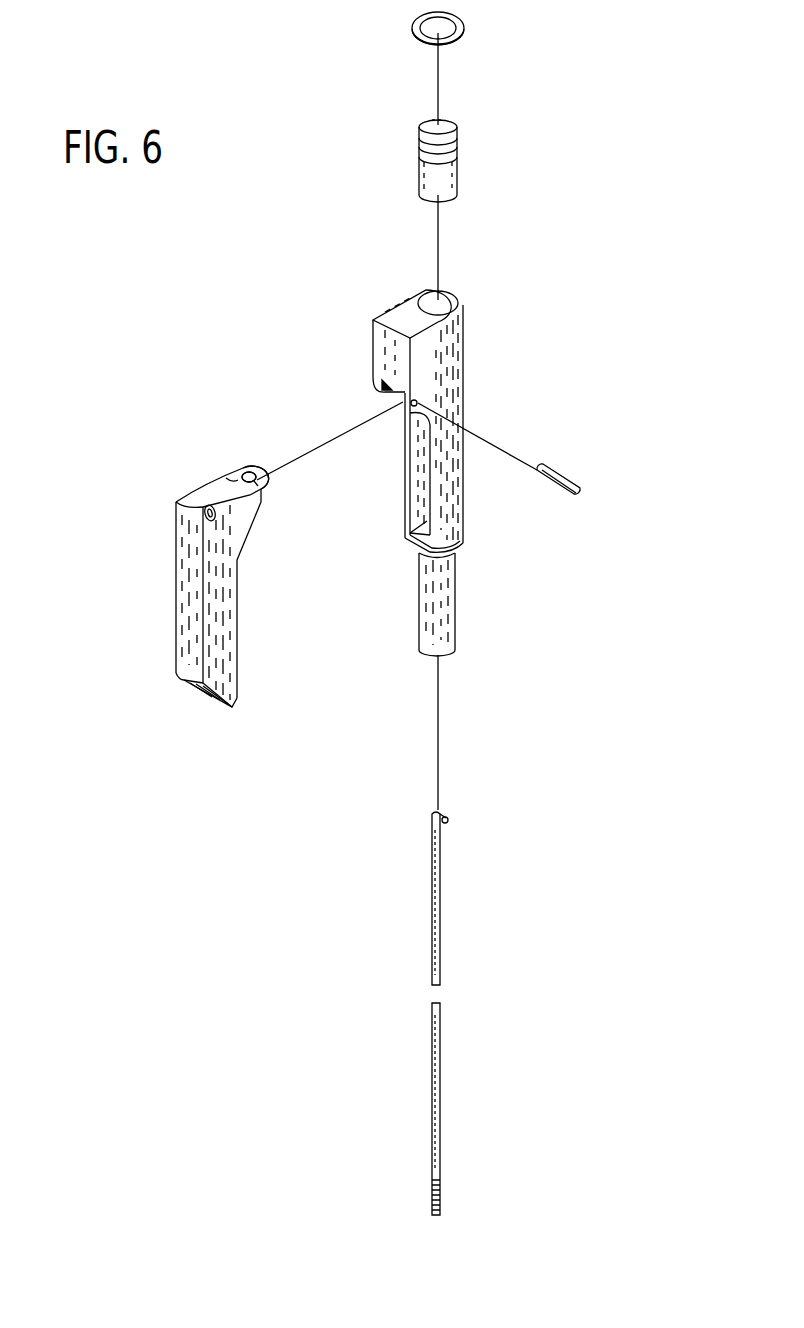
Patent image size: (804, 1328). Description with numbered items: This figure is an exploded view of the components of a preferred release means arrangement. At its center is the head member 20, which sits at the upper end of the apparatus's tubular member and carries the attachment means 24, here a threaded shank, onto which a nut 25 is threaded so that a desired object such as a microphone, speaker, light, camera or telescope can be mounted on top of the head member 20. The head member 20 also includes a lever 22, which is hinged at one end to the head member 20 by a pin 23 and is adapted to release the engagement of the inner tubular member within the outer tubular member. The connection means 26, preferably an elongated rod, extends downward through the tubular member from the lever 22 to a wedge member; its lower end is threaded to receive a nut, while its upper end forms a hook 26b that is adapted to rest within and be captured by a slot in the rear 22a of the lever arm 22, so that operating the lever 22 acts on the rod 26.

The head member 20 is at (465, 335).
The lever 22 is at (239, 689).
The rear of lever arm 22a is at (263, 497).
The pin 23 is at (563, 480).
The attachment means 24 is at (460, 173).
The nut 25 is at (466, 33).
The connection means 26 is at (441, 923).
The hook 26b is at (446, 818).